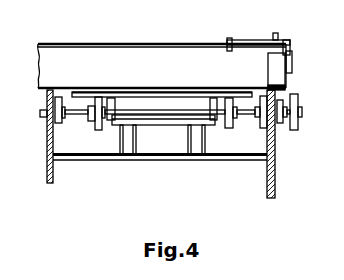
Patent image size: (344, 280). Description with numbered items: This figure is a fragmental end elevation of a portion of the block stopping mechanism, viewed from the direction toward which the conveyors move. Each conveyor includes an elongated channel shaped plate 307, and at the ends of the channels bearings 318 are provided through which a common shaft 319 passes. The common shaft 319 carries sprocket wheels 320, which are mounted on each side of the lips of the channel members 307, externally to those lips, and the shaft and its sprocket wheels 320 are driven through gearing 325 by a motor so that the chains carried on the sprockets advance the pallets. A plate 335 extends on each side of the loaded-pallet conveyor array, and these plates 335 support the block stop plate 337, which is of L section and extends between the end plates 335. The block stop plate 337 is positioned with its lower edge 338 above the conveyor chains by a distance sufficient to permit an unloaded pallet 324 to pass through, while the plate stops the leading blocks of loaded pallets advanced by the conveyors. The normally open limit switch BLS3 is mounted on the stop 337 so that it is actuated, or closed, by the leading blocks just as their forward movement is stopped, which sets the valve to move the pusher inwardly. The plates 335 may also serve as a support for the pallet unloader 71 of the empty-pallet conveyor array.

The block stop plate 337 is at (133, 43).
The lower edge 338 is at (135, 93).
The common shaft 319 is at (118, 109).
The unloaded pallet 324 is at (155, 94).
The limit switch BLS3 is at (273, 69).
The gearing 325 is at (297, 102).
The sprocket wheel 320 is at (89, 121).
The channel shaped plate 307 is at (163, 125).
The bearing 318 is at (268, 126).
The plate 335 is at (276, 184).
The pallet unloader 71 is at (178, 196).